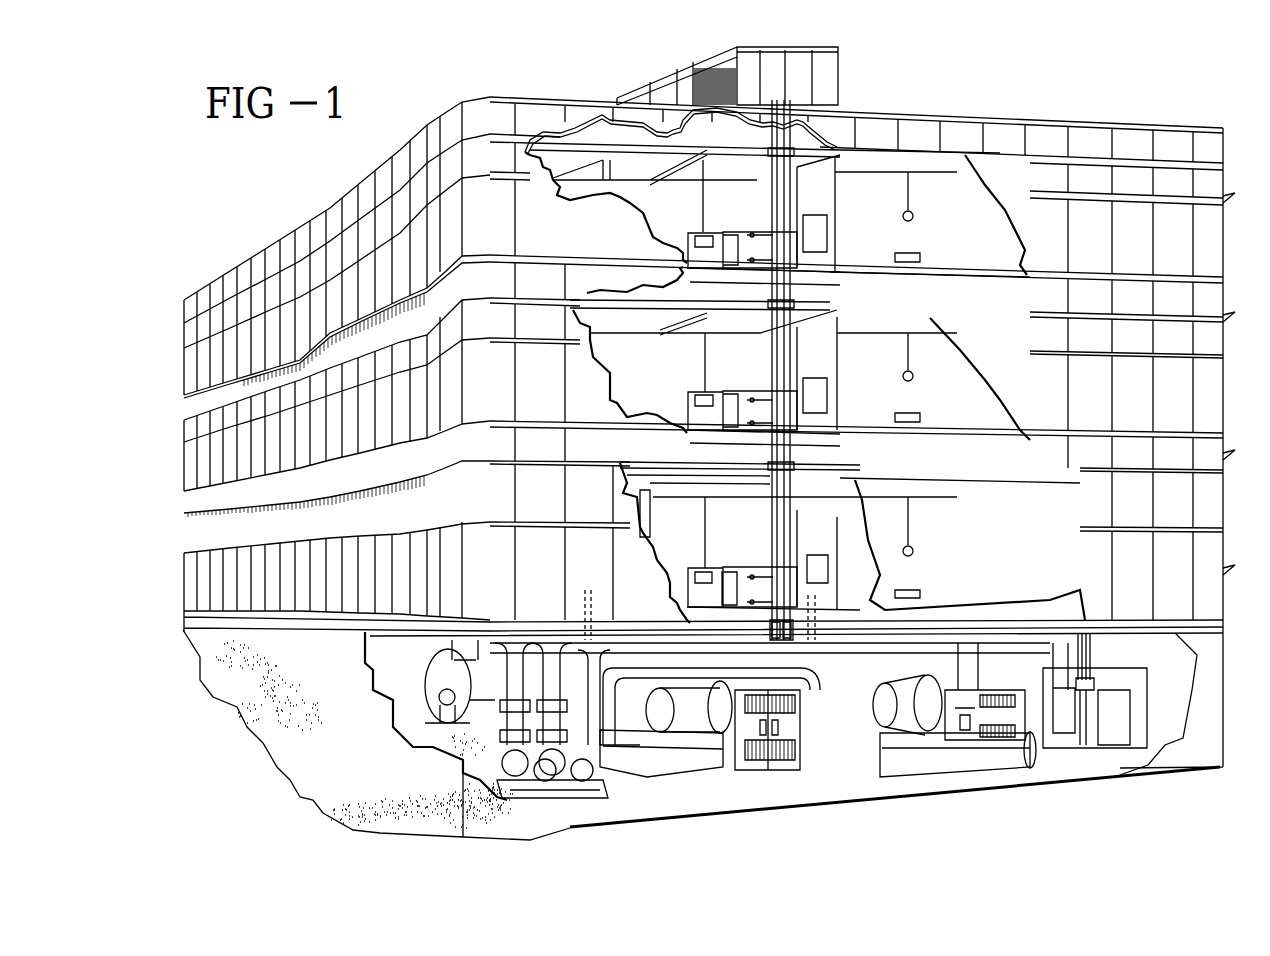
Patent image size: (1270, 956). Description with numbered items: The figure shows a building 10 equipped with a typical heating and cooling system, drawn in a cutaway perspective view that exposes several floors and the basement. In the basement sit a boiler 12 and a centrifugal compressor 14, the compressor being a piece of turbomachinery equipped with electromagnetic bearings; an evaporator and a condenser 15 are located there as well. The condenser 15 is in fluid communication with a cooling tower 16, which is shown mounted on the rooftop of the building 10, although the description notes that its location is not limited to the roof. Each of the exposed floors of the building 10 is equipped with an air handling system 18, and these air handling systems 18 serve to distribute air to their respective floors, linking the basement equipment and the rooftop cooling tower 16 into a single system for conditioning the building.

The building 10 is at (709, 468).
The boiler 12 is at (425, 688).
The centrifugal compressor 14 is at (702, 736).
The condenser 15 is at (675, 767).
The cooling tower 16 is at (817, 43).
The air handling system 18 is at (688, 258).